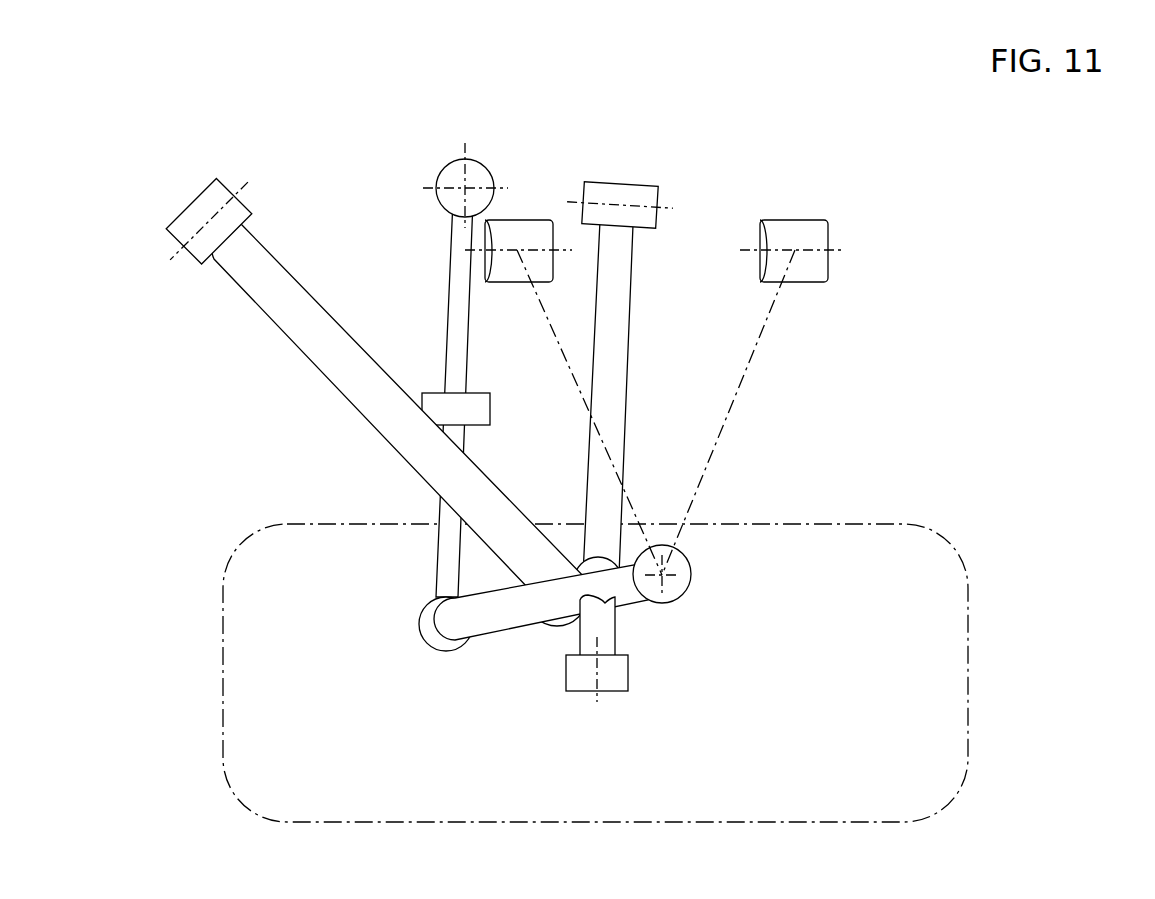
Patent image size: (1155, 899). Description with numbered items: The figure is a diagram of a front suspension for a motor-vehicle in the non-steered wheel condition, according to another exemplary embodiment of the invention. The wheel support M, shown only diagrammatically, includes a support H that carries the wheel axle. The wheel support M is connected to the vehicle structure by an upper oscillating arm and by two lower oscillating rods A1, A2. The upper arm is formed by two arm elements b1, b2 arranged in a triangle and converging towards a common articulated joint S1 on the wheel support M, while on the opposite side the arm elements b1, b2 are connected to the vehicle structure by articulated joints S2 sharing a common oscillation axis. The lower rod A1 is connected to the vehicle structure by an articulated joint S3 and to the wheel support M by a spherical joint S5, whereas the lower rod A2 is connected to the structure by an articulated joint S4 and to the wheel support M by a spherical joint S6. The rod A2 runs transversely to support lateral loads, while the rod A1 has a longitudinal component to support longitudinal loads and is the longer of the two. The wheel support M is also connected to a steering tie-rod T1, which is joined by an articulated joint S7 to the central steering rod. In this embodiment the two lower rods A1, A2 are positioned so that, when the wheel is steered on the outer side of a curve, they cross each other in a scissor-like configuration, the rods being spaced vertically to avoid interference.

The articulated joint S1 is at (678, 587).
The articulated joints S2 is at (528, 222).
The articulated joint S3 is at (202, 210).
The articulated joint S4 is at (625, 187).
The spherical joint S5 is at (567, 622).
The spherical joint S6 is at (597, 557).
The articulated joint S7 is at (450, 170).
The steering tie-rod T1 is at (450, 333).
The lower oscillating rod A1 is at (297, 348).
The lower oscillating rod A2 is at (632, 367).
The arm element b1 is at (737, 393).
The arm element b2 is at (552, 330).
The wheel support M is at (620, 635).
The support H is at (617, 680).